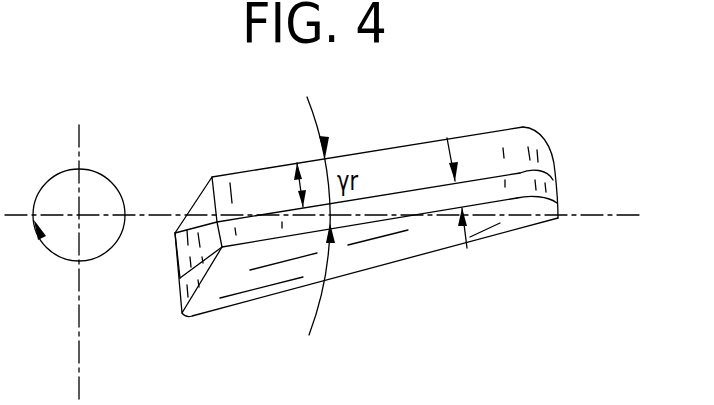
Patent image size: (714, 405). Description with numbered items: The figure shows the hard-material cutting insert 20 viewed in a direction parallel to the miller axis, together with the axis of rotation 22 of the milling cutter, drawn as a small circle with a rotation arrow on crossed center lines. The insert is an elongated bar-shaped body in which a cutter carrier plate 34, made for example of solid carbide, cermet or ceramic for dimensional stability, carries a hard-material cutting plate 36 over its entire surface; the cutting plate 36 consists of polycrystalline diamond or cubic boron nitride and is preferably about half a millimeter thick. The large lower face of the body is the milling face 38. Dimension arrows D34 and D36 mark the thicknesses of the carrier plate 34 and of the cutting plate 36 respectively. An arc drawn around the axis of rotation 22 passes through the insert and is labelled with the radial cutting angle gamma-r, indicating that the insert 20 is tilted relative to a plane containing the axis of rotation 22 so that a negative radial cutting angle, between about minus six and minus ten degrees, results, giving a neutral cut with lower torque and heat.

The hard-material cutting insert 20 is at (238, 172).
The axis of rotation 22 is at (79, 140).
The cutter carrier plate 34 is at (403, 162).
The hard-material cutting plate 36 is at (505, 190).
The milling face 38 is at (353, 255).
The thickness of top face 34 D34 is at (274, 185).
The thickness of side face 36 D36 is at (466, 196).